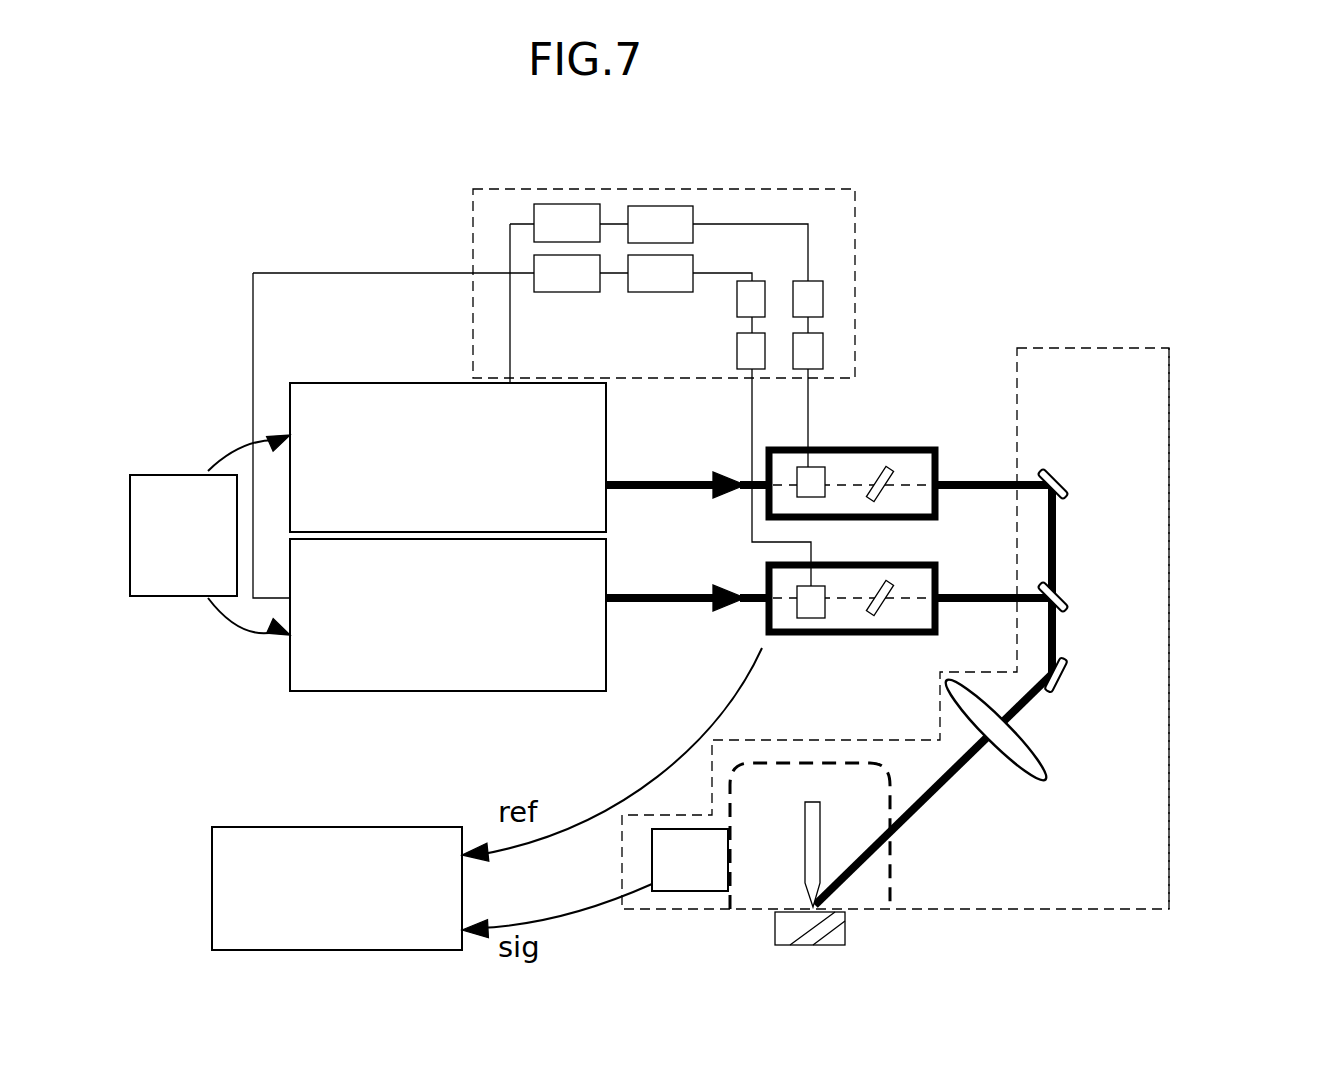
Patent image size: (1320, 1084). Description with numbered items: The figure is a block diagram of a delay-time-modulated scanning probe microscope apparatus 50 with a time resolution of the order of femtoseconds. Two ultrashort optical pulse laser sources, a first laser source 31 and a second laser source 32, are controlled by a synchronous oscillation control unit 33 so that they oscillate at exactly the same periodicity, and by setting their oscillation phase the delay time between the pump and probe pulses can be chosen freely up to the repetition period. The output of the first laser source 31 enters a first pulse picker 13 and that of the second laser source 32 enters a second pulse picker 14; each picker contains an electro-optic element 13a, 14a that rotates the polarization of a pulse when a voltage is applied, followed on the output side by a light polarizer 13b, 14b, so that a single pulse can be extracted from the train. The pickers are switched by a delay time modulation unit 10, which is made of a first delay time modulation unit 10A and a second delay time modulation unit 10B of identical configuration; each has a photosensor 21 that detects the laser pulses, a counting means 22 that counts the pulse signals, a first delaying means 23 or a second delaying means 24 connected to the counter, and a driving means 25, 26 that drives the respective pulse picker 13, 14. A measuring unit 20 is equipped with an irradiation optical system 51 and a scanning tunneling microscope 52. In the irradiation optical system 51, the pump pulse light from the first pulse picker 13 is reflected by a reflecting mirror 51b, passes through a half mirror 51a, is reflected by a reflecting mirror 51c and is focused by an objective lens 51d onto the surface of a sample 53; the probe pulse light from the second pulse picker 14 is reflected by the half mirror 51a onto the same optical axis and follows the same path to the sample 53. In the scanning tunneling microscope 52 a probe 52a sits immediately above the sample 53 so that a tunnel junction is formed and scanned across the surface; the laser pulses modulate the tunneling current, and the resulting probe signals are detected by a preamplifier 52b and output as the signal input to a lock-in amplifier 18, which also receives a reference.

The delay time modulation unit 10 is at (855, 237).
The first delay time modulation unit 10A is at (752, 223).
The second delay time modulation unit 10B is at (752, 272).
The photosensor 21 is at (550, 258).
The counting means 22 is at (657, 263).
The first delaying means 23 is at (823, 298).
The second delaying means 24 is at (737, 292).
The driving means 25 is at (823, 352).
The driving means 26 is at (737, 350).
The first laser source 31 is at (345, 383).
The second laser source 32 is at (355, 692).
The synchronous oscillation control unit 33 is at (169, 596).
The first pulse picker 13 is at (765, 500).
The electro-optic element 13a is at (810, 467).
The light polarizer 13b is at (890, 470).
The second pulse picker 14 is at (765, 617).
The electro-optic element 14a is at (813, 618).
The light polarizer 14b is at (885, 617).
The scanning probe microscope apparatus 50 is at (1013, 328).
The measuring unit 20 is at (1169, 600).
The irradiation optical system 51 is at (1119, 437).
The half mirror 51a is at (1062, 587).
The reflecting mirror 51b is at (1062, 472).
The reflecting mirror 51c is at (1063, 665).
The objective lens 51d is at (1037, 752).
The scanning tunneling microscope 52 is at (895, 880).
The probe 52a is at (812, 800).
The preamplifier 52b is at (672, 891).
The sample 53 is at (845, 925).
The lock-in amplifier 18 is at (293, 827).